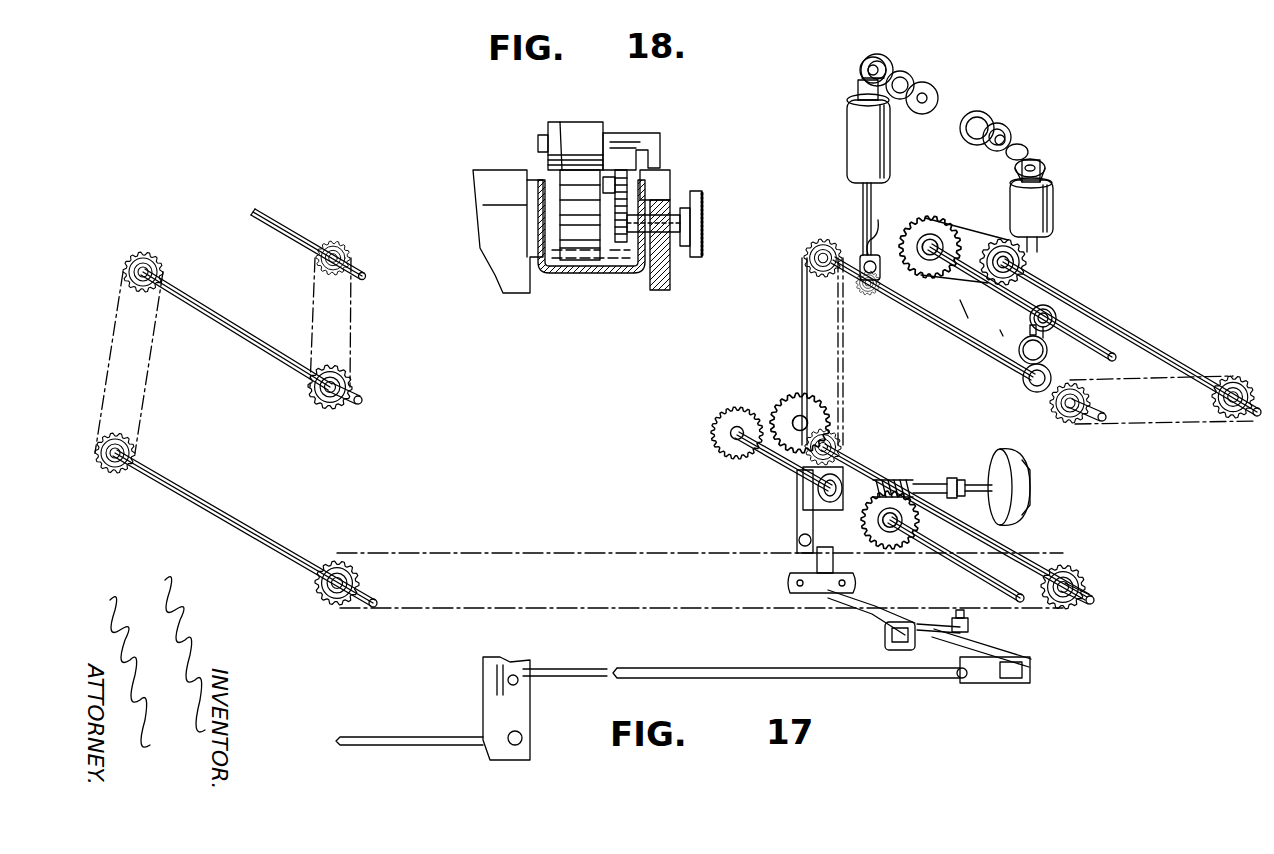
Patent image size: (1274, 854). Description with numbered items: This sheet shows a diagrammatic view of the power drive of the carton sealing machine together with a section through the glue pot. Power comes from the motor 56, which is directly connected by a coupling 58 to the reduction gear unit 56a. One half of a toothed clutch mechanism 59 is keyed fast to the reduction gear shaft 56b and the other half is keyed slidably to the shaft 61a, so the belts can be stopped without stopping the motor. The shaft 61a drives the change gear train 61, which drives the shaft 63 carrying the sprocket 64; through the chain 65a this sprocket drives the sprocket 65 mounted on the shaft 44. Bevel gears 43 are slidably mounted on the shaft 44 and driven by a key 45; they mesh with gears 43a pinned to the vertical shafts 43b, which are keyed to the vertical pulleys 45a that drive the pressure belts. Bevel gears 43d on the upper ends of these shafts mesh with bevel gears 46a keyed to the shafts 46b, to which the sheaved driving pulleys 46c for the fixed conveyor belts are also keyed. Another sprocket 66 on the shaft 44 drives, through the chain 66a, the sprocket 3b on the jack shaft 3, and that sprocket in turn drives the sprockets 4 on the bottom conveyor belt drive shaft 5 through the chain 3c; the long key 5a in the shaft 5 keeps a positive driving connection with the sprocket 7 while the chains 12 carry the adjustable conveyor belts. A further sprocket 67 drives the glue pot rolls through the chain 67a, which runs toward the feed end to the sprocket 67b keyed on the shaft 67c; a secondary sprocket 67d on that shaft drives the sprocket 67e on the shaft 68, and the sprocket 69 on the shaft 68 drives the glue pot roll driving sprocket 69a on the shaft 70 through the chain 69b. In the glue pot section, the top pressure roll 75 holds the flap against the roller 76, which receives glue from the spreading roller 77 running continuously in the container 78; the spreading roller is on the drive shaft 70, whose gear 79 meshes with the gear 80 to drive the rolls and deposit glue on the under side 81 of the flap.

In FIG. 17, the jack shaft 3 is at (1090, 345).
In FIG. 17, the sprocket 3b is at (1025, 264).
In FIG. 17, the chain 3c is at (975, 238).
In FIG. 17, the sprocket 4 is at (935, 230).
In FIG. 17, the bottom conveyor belt drive shaft 5 is at (1130, 350).
In FIG. 17, the key 5a is at (1040, 301).
In FIG. 17, the sprocket 7 is at (982, 315).
In FIG. 17, the chain 12 is at (915, 325).
In FIG. 17, the bevel gear 43 is at (866, 295).
In FIG. 17, the gear 43a is at (880, 228).
In FIG. 17, the shaft 43b is at (863, 200).
In FIG. 17, the bevel gear 43d is at (860, 72).
In FIG. 17, the shaft 44 is at (945, 336).
In FIG. 17, the key 45 is at (880, 276).
In FIG. 17, the vertical pulley 45a is at (890, 148).
In FIG. 17, the bevel gear 46a is at (880, 60).
In FIG. 17, the shaft 46b is at (1005, 140).
In FIG. 17, the driving pulley 46c is at (918, 90).
In FIG. 17, the motor 56 is at (1031, 488).
In FIG. 17, the reduction gear unit 56a is at (887, 478).
In FIG. 17, the reduction gear shaft 56b is at (955, 565).
In FIG. 17, the coupling 58 is at (960, 478).
In FIG. 17, the clutch mechanism 59 is at (790, 580).
In FIG. 17, the change gear train 61 is at (712, 434).
In FIG. 17, the shaft 61a is at (775, 460).
In FIG. 17, the shaft 63 is at (995, 548).
In FIG. 17, the sprocket 64 is at (840, 440).
In FIG. 17, the sprocket 65 is at (822, 240).
In FIG. 17, the chain 65a is at (845, 376).
In FIG. 17, the sprocket 66 is at (1090, 401).
In FIG. 17, the chain 66a is at (1130, 425).
In FIG. 17, the sprocket 67 is at (1068, 608).
In FIG. 17, the chain 67a is at (583, 606).
In FIG. 17, the sprocket 67b is at (352, 570).
In FIG. 17, the shaft 67c is at (250, 528).
In FIG. 17, the secondary sprocket 67d is at (132, 455).
In FIG. 17, the sprocket 67e is at (160, 262).
In FIG. 17, the shaft 68 is at (240, 330).
In FIG. 17, the sprocket 69 is at (352, 382).
In FIG. 17, the glue pot roll driving sprocket 69a is at (350, 252).
In FIG. 17, the chain 69b is at (352, 308).
In FIG. 18, the drive shaft 70 is at (675, 223).
In FIG. 17, the drive shaft 70 is at (300, 236).
In FIG. 18, the top pressure roll 75 is at (583, 130).
In FIG. 18, the roller 76 is at (565, 178).
In FIG. 18, the spreading roller 77 is at (582, 248).
In FIG. 18, the container 78 is at (602, 273).
In FIG. 18, the gear 79 is at (632, 205).
In FIG. 18, the gear 80 is at (640, 150).
In FIG. 18, the under side of the flap 81 is at (572, 165).